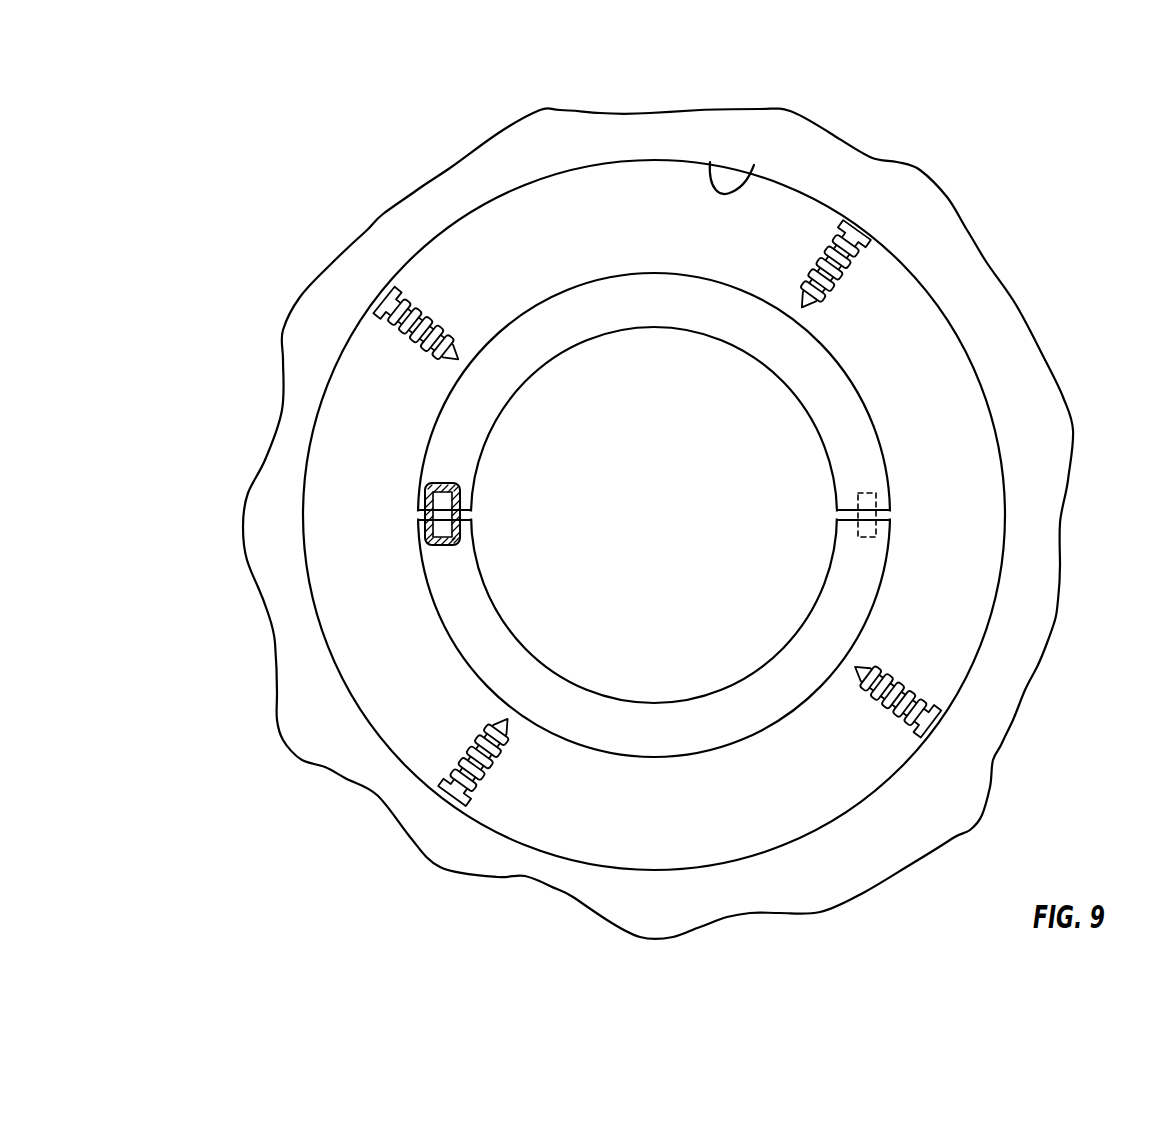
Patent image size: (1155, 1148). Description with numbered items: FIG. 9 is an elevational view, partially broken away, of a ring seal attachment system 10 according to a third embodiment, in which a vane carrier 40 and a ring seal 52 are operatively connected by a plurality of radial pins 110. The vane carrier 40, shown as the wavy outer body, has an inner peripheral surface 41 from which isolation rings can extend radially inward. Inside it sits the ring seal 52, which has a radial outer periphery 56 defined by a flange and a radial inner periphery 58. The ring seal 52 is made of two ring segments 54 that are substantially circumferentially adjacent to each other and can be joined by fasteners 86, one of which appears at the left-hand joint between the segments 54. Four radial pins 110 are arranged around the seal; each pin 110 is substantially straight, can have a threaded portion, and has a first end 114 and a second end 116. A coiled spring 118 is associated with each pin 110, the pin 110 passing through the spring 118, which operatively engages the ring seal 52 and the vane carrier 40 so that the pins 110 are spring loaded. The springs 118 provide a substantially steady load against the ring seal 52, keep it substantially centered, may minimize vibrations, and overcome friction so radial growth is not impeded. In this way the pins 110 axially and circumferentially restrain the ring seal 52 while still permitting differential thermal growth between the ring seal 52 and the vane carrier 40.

The implant system 10 is at (293, 268).
The vane carrier 40 is at (864, 172).
The inner peripheral surface 41 is at (738, 186).
The ring seal 52 is at (902, 404).
The ring segments 54 is at (846, 444).
The radial outer periphery 56 is at (612, 273).
The radial inner periphery 58 is at (738, 349).
The fasteners 86 is at (443, 505).
The radial pins 110 is at (388, 366).
The first end 114 is at (467, 330).
The second end 116 is at (402, 284).
The coiled springs 118 is at (438, 352).